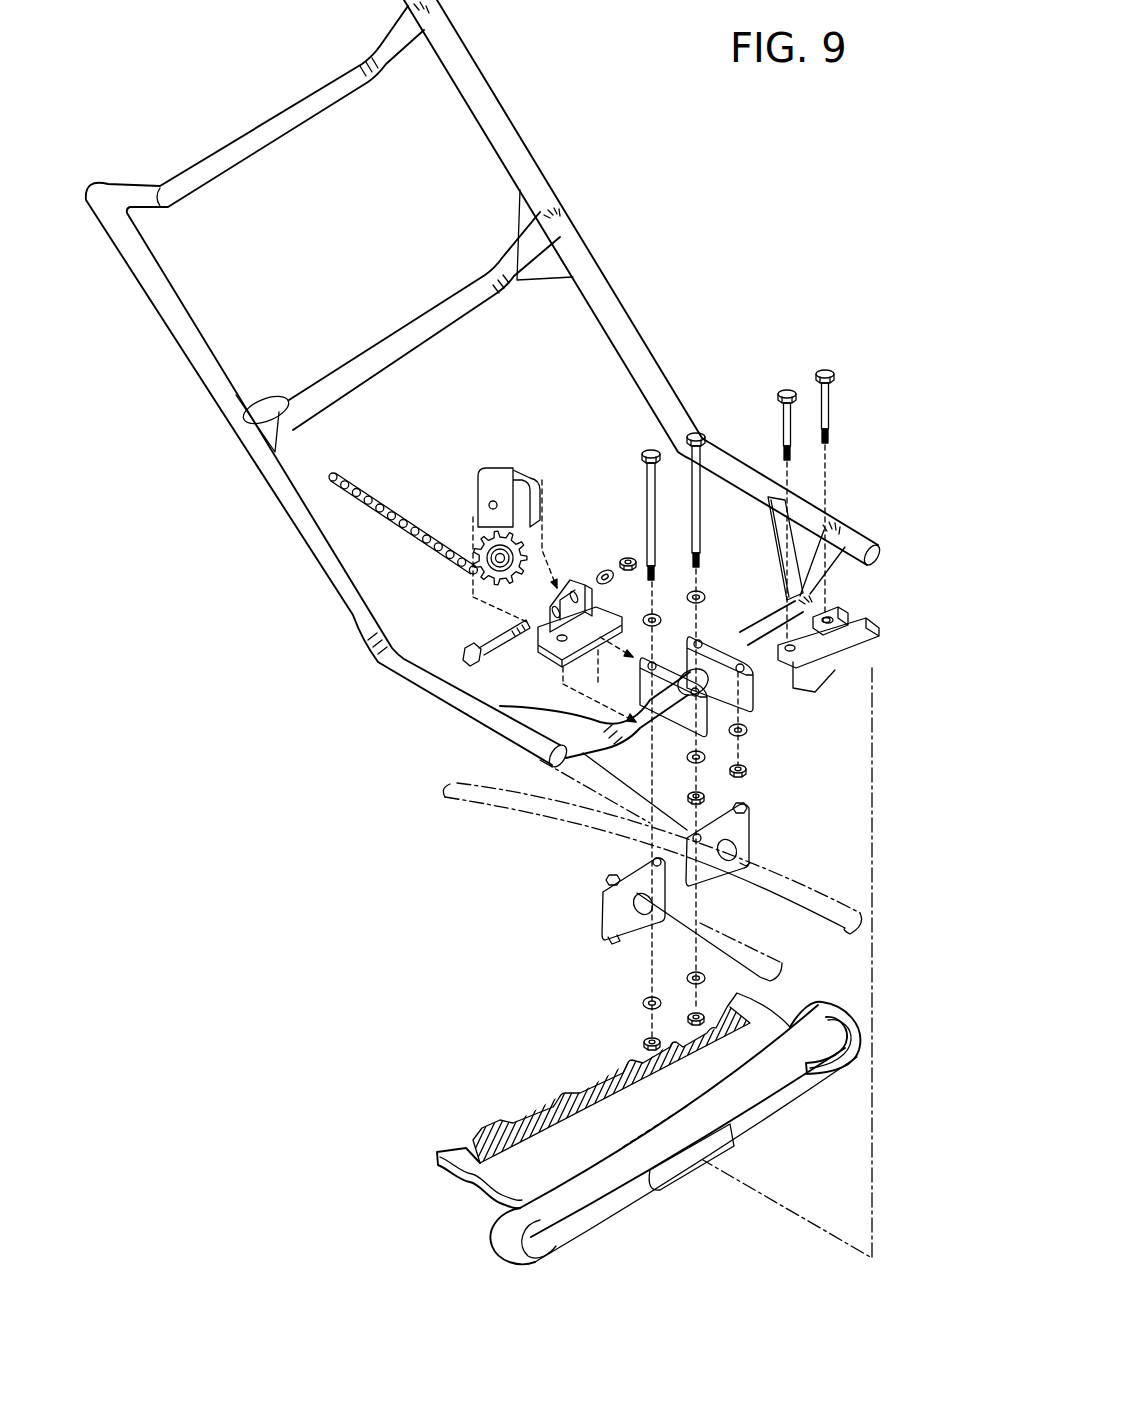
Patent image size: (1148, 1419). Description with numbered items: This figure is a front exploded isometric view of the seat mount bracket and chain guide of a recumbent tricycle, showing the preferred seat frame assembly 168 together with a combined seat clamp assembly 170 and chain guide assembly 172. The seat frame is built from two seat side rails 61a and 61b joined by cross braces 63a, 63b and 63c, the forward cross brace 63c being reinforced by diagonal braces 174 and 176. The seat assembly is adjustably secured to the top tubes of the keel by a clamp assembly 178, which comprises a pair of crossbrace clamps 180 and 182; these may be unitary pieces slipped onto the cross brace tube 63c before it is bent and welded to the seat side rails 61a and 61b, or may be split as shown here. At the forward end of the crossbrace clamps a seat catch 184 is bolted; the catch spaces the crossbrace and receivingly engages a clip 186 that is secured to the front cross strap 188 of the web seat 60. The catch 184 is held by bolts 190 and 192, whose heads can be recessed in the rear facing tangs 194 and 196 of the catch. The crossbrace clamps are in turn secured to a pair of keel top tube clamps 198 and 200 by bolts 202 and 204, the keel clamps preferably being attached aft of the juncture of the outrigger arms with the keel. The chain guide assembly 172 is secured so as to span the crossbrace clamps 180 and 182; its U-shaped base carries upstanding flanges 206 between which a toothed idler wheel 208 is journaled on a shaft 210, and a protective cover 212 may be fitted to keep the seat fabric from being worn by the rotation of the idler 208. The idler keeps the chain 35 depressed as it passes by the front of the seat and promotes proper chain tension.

The web seat 60 is at (573, 1080).
The chain 35 is at (373, 497).
The seat side rail 61a is at (508, 146).
The seat side rail 61b is at (167, 307).
The cross brace 63a is at (270, 130).
The cross brace 63b is at (410, 330).
The forward cross brace 63c is at (770, 640).
The seat frame assembly 168 is at (200, 680).
The seat clamp assembly 170 is at (553, 923).
The chain guide assembly 172 is at (518, 445).
The diagonal brace 174 is at (776, 540).
The diagonal brace 176 is at (510, 705).
The clamp assembly 178 is at (777, 793).
The crossbrace clamp 180 is at (687, 720).
The crossbrace clamp 182 is at (750, 700).
The seat catch 184 is at (860, 658).
The clip 186 is at (680, 1167).
The front cross strap 188 is at (743, 1093).
The bolt 190 is at (785, 420).
The bolt 192 is at (826, 400).
The rear facing tang 194 is at (843, 618).
The rear facing tang 196 is at (826, 688).
The keel top tube clamp 198 is at (767, 833).
The keel top tube clamp 200 is at (630, 860).
The bolt 202 is at (690, 458).
The bolt 204 is at (643, 497).
The upstanding flanges 206 is at (573, 590).
The toothed idler wheel 208 is at (478, 576).
The shaft 210 is at (487, 640).
The protective cover 212 is at (493, 473).